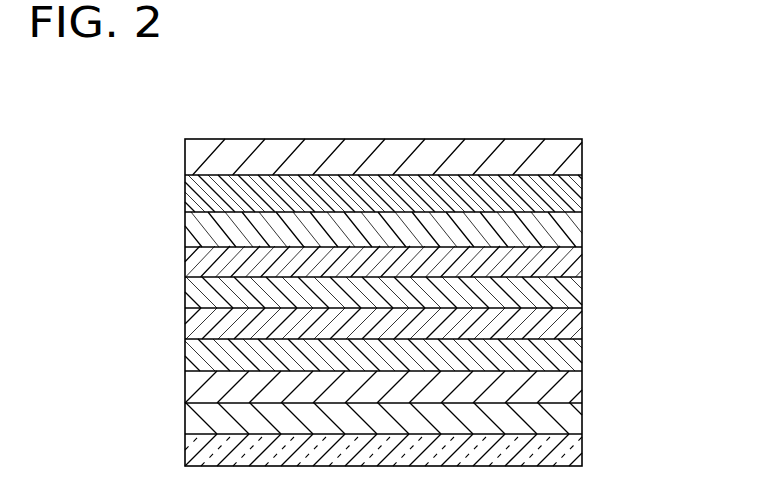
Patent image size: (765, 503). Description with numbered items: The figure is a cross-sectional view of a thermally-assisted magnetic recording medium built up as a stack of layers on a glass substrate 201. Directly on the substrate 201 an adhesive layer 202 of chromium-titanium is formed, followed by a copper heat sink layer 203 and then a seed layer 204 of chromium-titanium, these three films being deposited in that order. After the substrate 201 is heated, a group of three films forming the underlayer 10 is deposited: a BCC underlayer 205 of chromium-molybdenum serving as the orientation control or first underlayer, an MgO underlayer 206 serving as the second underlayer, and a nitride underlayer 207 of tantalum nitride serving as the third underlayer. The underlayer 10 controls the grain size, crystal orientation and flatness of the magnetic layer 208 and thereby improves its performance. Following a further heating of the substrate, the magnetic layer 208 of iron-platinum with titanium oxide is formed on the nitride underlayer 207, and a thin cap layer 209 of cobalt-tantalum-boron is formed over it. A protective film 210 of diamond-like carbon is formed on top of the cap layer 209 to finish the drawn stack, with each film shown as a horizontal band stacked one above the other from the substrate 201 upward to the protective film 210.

The underlayer 10 is at (670, 266).
The glass substrate 201 is at (570, 453).
The adhesive layer 202 is at (568, 413).
The heat sink layer 203 is at (565, 386).
The seed layer 204 is at (568, 356).
The BCC underlayer 205 is at (573, 329).
The MgO underlayer 206 is at (572, 293).
The nitride underlayer 207 is at (572, 258).
The magnetic layer 208 is at (570, 229).
The cap layer 209 is at (573, 195).
The protective film 210 is at (575, 154).